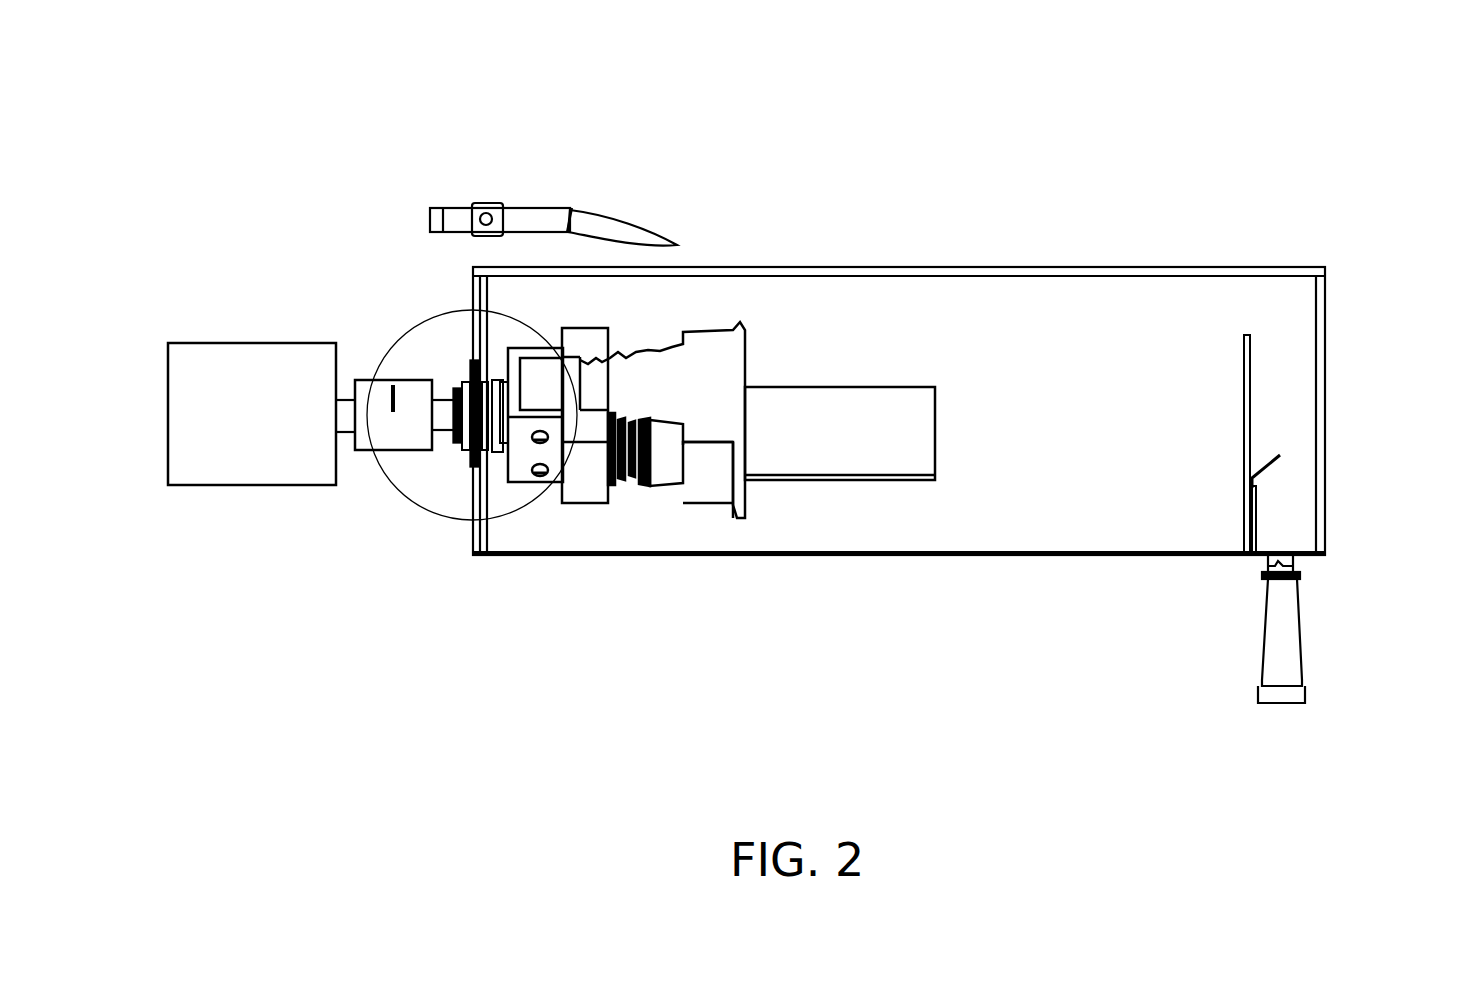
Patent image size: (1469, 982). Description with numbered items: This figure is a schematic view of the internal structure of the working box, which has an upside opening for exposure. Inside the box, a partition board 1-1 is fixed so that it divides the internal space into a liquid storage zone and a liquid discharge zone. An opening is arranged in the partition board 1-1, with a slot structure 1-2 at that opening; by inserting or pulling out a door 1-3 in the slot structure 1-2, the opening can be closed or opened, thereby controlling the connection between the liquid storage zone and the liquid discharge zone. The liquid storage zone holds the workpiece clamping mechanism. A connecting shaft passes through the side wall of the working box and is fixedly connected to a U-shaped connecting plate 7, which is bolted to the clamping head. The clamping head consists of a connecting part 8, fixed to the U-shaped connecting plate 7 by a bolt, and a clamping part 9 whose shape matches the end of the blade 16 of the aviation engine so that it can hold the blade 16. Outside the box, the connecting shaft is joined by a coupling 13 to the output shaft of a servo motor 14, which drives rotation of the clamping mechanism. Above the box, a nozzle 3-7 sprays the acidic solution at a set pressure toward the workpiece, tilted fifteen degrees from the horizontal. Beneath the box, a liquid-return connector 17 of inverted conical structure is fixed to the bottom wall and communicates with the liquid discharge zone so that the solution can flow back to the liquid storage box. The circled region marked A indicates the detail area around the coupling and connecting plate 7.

The partition board 1-1 is at (1252, 372).
The slot structure 1-2 is at (1256, 522).
The door 1-3 is at (1255, 486).
The nozzle 3-7 is at (548, 213).
The U-shaped connecting plate 7 is at (503, 563).
The connecting part 8 is at (543, 388).
The clamping part 9 is at (653, 544).
The coupling 13 is at (415, 413).
The servo motor 14 is at (195, 413).
The blade 16 is at (840, 577).
The liquid-return connector 17 is at (1297, 640).
The detail region A is at (423, 503).